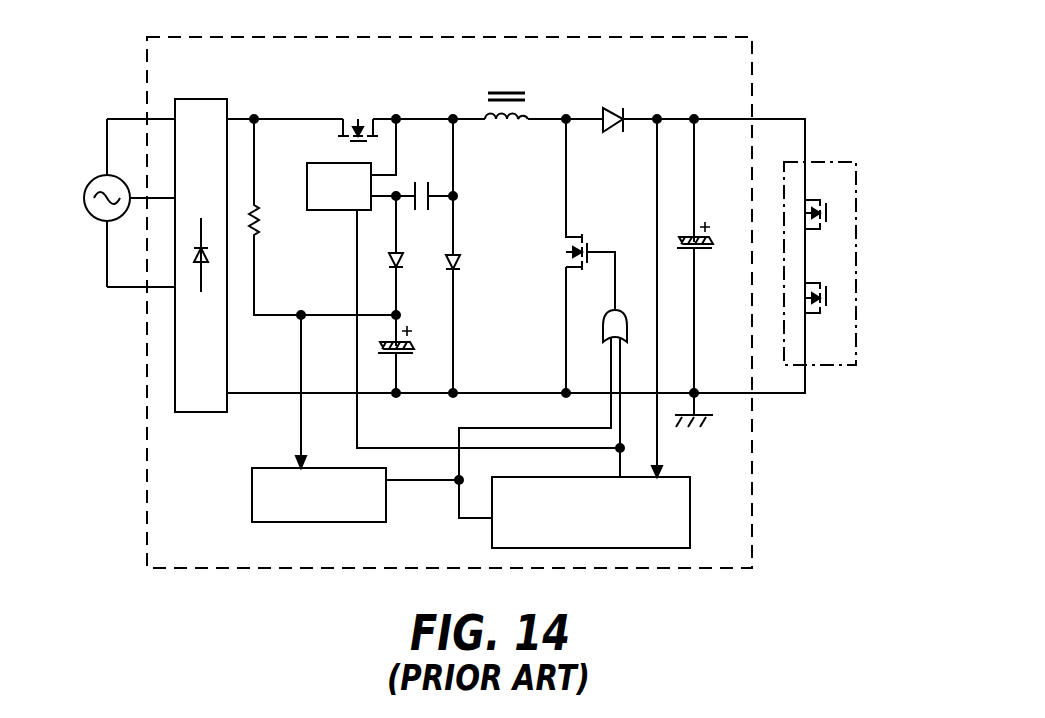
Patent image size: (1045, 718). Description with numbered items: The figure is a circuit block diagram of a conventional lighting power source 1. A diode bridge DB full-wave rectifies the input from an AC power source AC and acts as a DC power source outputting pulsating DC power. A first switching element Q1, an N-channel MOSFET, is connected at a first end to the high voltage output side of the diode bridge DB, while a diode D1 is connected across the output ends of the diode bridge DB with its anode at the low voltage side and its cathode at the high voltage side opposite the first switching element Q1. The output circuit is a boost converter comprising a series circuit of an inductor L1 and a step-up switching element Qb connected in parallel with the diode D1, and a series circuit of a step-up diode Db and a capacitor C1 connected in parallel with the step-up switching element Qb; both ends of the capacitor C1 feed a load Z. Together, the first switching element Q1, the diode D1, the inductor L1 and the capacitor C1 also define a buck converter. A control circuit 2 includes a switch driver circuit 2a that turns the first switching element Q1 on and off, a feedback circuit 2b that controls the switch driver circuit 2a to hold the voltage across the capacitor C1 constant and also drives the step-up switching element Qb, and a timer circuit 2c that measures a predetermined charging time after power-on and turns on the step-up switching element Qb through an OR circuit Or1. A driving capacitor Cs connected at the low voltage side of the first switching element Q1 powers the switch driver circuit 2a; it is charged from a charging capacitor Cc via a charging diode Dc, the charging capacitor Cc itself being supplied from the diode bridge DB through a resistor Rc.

The lighting power source 1 is at (752, 88).
The control circuit 2 is at (251, 479).
The switch driver circuit 2a is at (338, 204).
The feedback circuit 2b is at (690, 506).
The timer circuit 2c is at (253, 513).
The load Z is at (837, 168).
The diode bridge DB is at (210, 106).
The AC power source AC is at (101, 183).
The first switching element Q1 is at (358, 112).
The inductor L1 is at (506, 90).
The step-up diode Db is at (631, 276).
The driving capacitor Cs is at (432, 182).
The diode D1 is at (472, 256).
The charging diode Dc is at (408, 257).
The charging capacitor Cc is at (406, 356).
The resistor Rc is at (322, 217).
The step-up switching element Qb is at (572, 256).
The OR circuit Or1 is at (541, 397).
The capacitor C1 is at (703, 271).